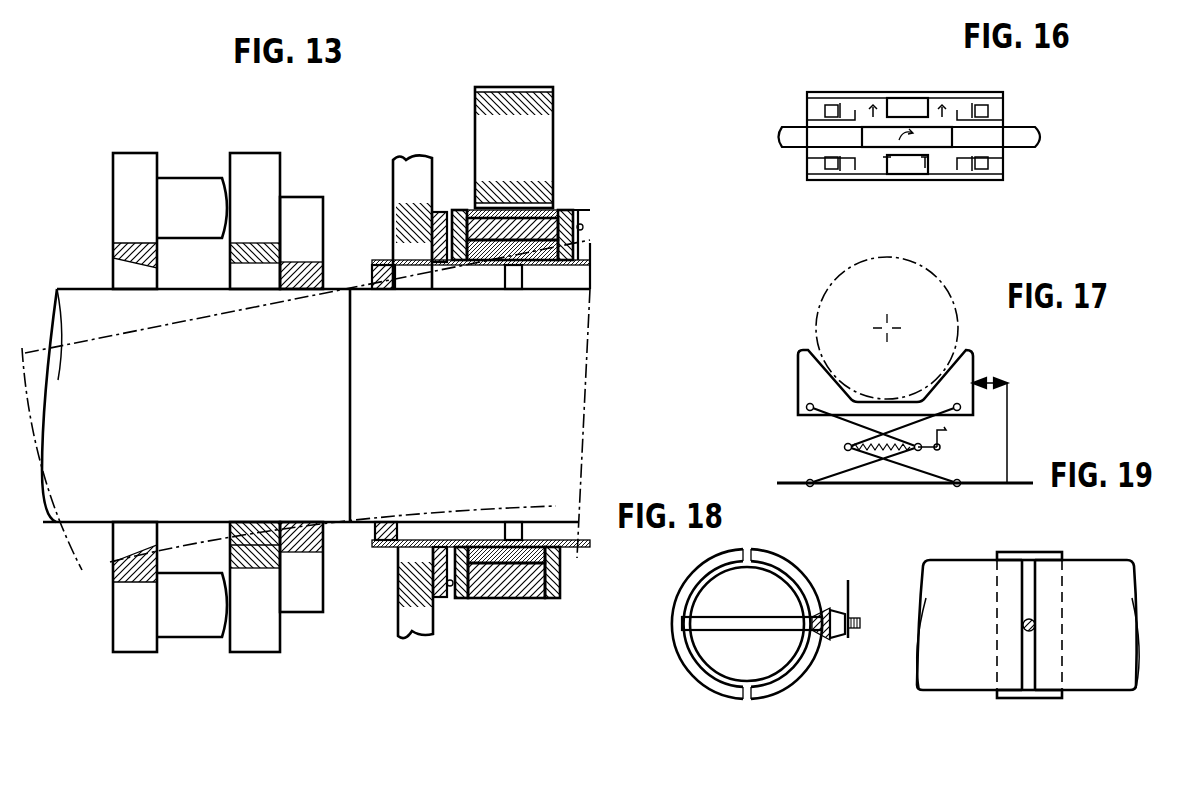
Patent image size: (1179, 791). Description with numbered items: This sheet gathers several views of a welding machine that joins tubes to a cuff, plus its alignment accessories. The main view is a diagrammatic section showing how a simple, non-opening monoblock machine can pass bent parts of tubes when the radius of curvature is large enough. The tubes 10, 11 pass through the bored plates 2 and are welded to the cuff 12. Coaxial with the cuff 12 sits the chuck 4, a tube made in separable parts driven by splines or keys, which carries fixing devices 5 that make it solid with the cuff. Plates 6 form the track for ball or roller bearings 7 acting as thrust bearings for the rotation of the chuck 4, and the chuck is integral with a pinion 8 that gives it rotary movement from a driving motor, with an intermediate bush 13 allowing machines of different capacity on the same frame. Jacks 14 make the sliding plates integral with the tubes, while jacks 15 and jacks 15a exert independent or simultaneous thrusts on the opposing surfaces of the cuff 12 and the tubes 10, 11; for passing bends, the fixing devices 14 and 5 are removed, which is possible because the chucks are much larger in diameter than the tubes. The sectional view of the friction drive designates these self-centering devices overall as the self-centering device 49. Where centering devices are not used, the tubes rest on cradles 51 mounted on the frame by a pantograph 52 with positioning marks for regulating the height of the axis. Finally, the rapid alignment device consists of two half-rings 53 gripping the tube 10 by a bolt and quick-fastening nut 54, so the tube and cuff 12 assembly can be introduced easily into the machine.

In FIG. 13, the plate 2 is at (138, 165).
In FIG. 13, the chuck 4 is at (445, 268).
In FIG. 16, the chuck 4 is at (912, 163).
In FIG. 13, the fixing device 5 is at (381, 265).
In FIG. 13, the plate 6 is at (412, 165).
In FIG. 13, the ball or roller bearing 7 is at (447, 215).
In FIG. 13, the pinion 8 is at (545, 206).
In FIG. 13, the tube 10 is at (95, 568).
In FIG. 16, the tube 10 is at (793, 140).
In FIG. 19, the tube 10 is at (945, 661).
In FIG. 16, the tube 11 is at (1020, 140).
In FIG. 16, the cuff 12 is at (940, 140).
In FIG. 19, the cuff 12 is at (1100, 665).
In FIG. 13, the intermediate bush 13 is at (584, 248).
In FIG. 13, the jack 14 is at (308, 208).
In FIG. 13, the jack 15 is at (192, 183).
In FIG. 16, the jack 15 is at (831, 170).
In FIG. 16, the jack 15a is at (988, 170).
In FIG. 16, the self-centering device 49 is at (935, 98).
In FIG. 17, the cradle 51 is at (968, 370).
In FIG. 17, the pantograph 52 is at (937, 478).
In FIG. 18, the half-ring 53 is at (692, 668).
In FIG. 19, the half-ring 53 is at (1048, 555).
In FIG. 18, the bolt and quick-fastening nut 54 is at (838, 642).